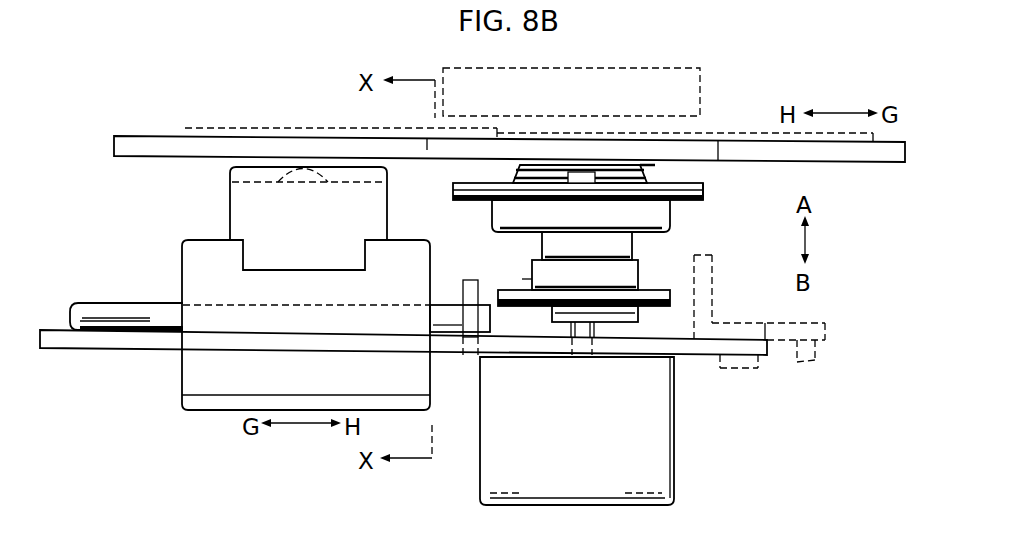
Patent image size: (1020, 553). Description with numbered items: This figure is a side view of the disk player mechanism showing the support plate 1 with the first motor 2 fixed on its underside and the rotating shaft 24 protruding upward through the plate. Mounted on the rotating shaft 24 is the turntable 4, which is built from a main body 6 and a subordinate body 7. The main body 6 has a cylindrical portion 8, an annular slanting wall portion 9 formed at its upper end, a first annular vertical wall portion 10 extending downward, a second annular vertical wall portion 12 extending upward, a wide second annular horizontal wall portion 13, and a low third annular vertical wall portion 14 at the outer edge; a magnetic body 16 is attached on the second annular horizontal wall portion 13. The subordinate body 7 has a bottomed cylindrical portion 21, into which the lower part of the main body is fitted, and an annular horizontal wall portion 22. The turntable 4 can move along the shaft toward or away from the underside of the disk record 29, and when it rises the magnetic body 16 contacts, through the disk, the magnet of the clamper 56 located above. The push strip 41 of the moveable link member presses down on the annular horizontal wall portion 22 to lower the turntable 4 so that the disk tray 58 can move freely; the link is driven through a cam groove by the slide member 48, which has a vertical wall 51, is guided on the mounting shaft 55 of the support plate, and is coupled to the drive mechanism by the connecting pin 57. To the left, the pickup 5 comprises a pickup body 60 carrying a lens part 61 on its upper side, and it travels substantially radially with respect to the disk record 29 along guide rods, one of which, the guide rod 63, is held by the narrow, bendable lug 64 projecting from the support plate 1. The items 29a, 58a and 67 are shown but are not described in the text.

The support plate 1 is at (695, 357).
The first motor 2 is at (676, 395).
The turntable 4 is at (710, 190).
The pickup 5 is at (226, 192).
The main body 6 is at (717, 174).
The subordinate body 7 is at (645, 275).
The cylindrical portion 8 is at (612, 240).
The annular slanting wall portion 9 is at (647, 170).
The first annular vertical wall portion 10 is at (513, 180).
The second annular vertical wall portion 12 is at (673, 222).
The second annular horizontal wall portion 13 is at (707, 199).
The third annular vertical wall portion 14 is at (683, 185).
The magnetic body 16 is at (455, 186).
The cylindrical portion 21 is at (648, 303).
The annular horizontal wall portion 22 is at (673, 293).
The rotating shaft 24 is at (591, 335).
The disk record 29 is at (751, 133).
The cartridge holder portion 29a is at (645, 133).
The push strip 41 is at (522, 279).
The slide member 48 is at (785, 323).
The vertical wall 51 is at (712, 258).
The mounting shaft 55 is at (720, 323).
The clamper 56 is at (570, 68).
The connecting pin 57 is at (808, 363).
The disk tray 58 is at (828, 163).
The cover plate seam 58a is at (718, 141).
The pickup body 60 is at (388, 220).
The lens part 61 is at (291, 167).
The guide rod 63 is at (129, 303).
The lug 64 is at (470, 280).
The shaft end block 67 is at (490, 332).